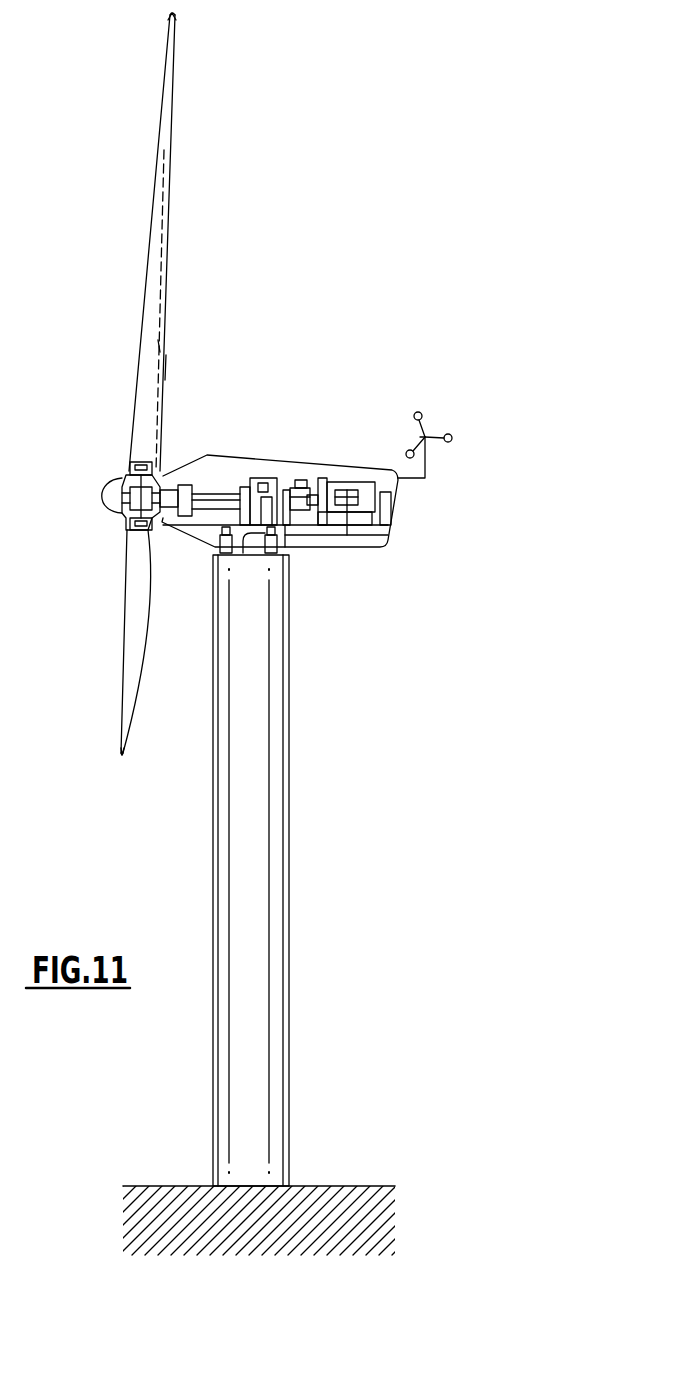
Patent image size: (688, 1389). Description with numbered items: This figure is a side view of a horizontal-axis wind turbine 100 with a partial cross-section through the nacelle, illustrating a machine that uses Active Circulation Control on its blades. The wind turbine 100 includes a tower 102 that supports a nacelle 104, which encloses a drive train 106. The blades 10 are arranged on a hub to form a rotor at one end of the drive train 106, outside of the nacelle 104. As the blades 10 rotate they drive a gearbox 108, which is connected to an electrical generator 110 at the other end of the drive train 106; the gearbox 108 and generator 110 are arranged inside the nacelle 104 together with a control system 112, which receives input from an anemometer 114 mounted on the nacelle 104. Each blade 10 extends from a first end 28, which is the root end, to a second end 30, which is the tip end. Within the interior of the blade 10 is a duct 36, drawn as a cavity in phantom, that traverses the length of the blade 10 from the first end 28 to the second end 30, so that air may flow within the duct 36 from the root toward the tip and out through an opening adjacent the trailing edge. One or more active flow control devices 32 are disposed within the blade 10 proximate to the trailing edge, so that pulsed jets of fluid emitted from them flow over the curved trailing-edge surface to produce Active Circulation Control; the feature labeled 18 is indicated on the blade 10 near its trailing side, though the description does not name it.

The blade 10 is at (150, 327).
The blade shell trailing edge 18 is at (166, 362).
The first end 28 is at (133, 455).
The second end 30 is at (174, 18).
The active flow control device 32 is at (163, 345).
The duct 36 is at (160, 282).
The wind turbine 100 is at (484, 243).
The tower 102 is at (275, 658).
The nacelle 104 is at (443, 515).
The drive train 106 is at (205, 498).
The gearbox 108 is at (262, 487).
The electrical generator 110 is at (346, 488).
The control system 112 is at (305, 480).
The anemometer 114 is at (436, 428).